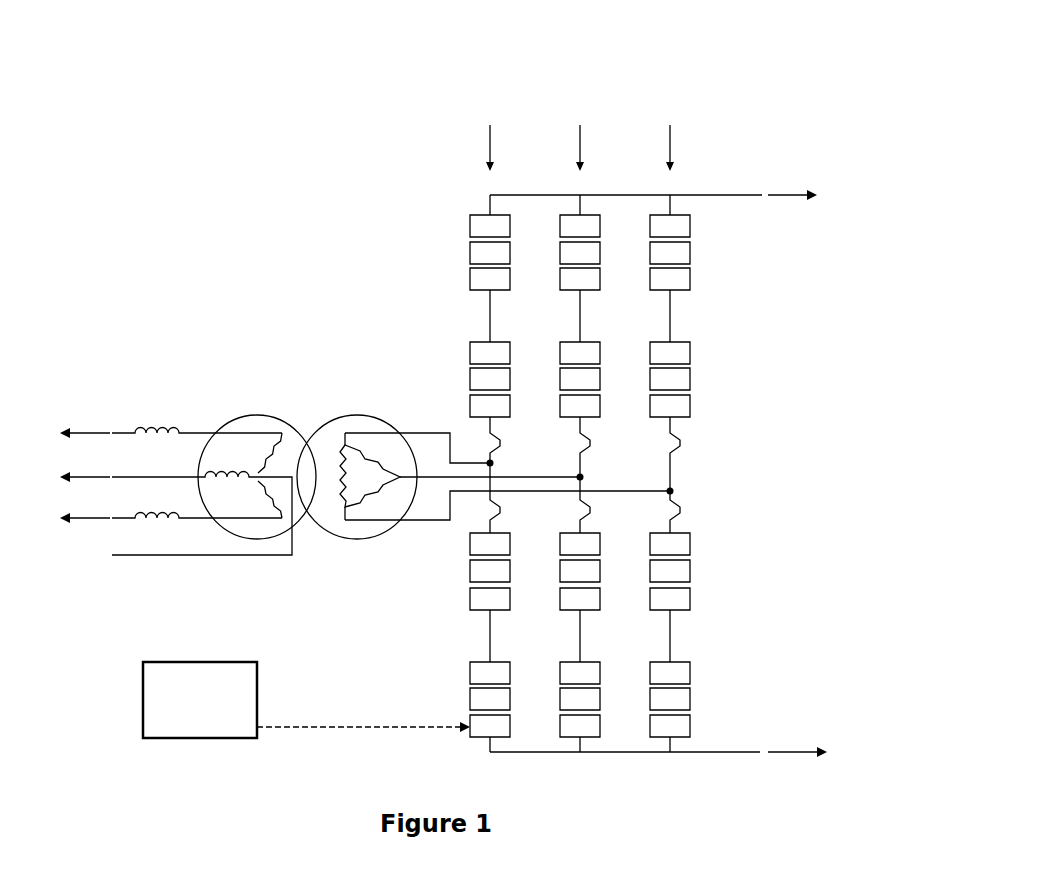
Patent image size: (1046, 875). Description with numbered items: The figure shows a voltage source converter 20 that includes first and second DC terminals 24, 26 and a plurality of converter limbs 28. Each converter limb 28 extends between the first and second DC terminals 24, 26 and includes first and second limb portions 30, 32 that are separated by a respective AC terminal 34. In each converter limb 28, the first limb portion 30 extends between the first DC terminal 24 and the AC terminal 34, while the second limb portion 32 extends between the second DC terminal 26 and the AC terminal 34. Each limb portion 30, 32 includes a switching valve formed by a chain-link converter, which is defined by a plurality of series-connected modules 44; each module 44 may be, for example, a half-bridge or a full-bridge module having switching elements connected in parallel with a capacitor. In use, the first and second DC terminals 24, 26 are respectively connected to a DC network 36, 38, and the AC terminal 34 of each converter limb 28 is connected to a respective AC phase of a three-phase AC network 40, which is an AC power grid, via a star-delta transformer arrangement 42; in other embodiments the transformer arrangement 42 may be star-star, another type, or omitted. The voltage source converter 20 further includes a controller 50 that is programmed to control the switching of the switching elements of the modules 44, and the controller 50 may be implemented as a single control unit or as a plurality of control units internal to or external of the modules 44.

The voltage source converter 20 is at (746, 134).
The first DC terminal 24 is at (673, 199).
The second DC terminal 26 is at (674, 748).
The converter limb 28 is at (580, 132).
The first limb portion 30 is at (715, 331).
The second limb portion 32 is at (703, 604).
The AC terminal 34 is at (490, 463).
The DC network 36 is at (810, 197).
The DC network 38 is at (815, 754).
The three-phase AC network 40 is at (68, 476).
The star-delta transformer arrangement 42 is at (308, 525).
The module 44 is at (481, 252).
The controller 50 is at (184, 712).